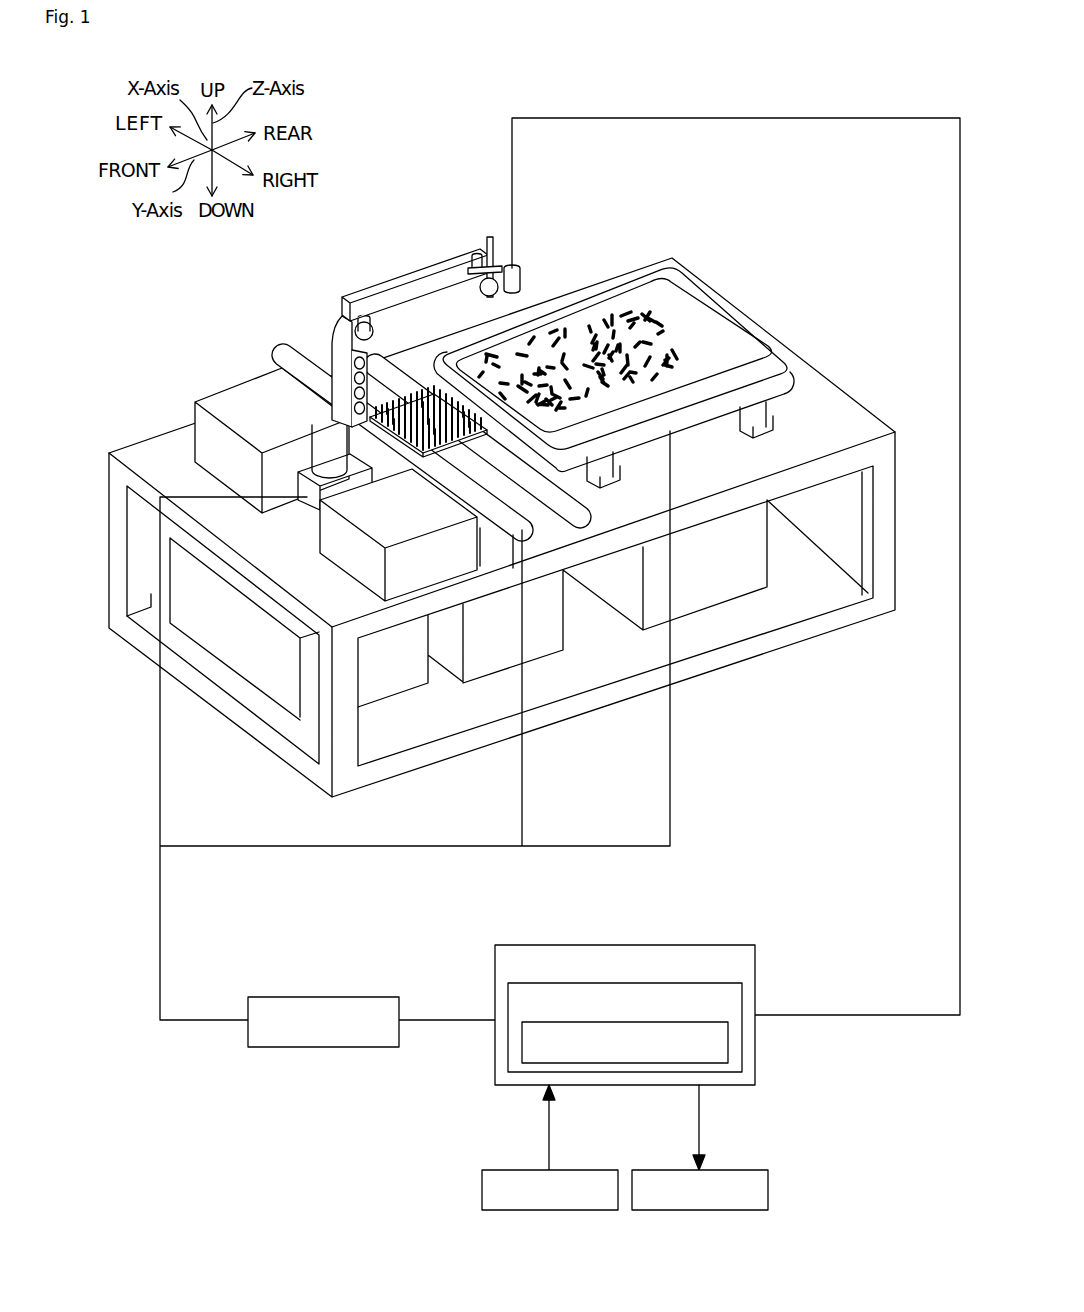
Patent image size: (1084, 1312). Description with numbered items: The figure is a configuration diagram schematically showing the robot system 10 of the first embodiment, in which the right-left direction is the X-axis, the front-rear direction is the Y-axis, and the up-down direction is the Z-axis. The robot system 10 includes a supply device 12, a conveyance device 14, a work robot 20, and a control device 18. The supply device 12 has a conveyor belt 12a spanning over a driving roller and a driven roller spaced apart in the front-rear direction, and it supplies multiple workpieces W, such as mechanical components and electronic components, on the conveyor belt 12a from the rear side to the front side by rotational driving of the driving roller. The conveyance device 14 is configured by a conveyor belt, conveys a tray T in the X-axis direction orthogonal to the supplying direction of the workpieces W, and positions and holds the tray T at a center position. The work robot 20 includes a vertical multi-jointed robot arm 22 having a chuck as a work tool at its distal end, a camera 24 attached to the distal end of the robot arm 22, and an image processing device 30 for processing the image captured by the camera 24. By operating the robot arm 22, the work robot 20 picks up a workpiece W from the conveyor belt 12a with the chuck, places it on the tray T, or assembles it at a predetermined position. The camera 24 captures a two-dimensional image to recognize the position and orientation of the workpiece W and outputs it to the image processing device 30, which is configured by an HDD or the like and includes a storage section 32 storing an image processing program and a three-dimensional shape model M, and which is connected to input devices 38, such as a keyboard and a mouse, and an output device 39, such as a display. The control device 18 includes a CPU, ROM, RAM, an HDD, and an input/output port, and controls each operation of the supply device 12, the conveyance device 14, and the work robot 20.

The robot system 10 is at (660, 198).
The supply device 12 is at (622, 350).
The conveyor belt 12a is at (684, 310).
The workpiece W is at (577, 335).
The conveyance device 14 is at (383, 439).
The tray T is at (397, 450).
The work robot 20 is at (407, 397).
The robot arm 22 is at (332, 329).
The camera 24 is at (512, 268).
The control device 18 is at (358, 997).
The image processing device 30 is at (666, 1015).
The storage section 32 is at (667, 1027).
The three-dimensional shape model M is at (741, 1038).
The input device 38 is at (576, 1168).
The output device 39 is at (726, 1168).